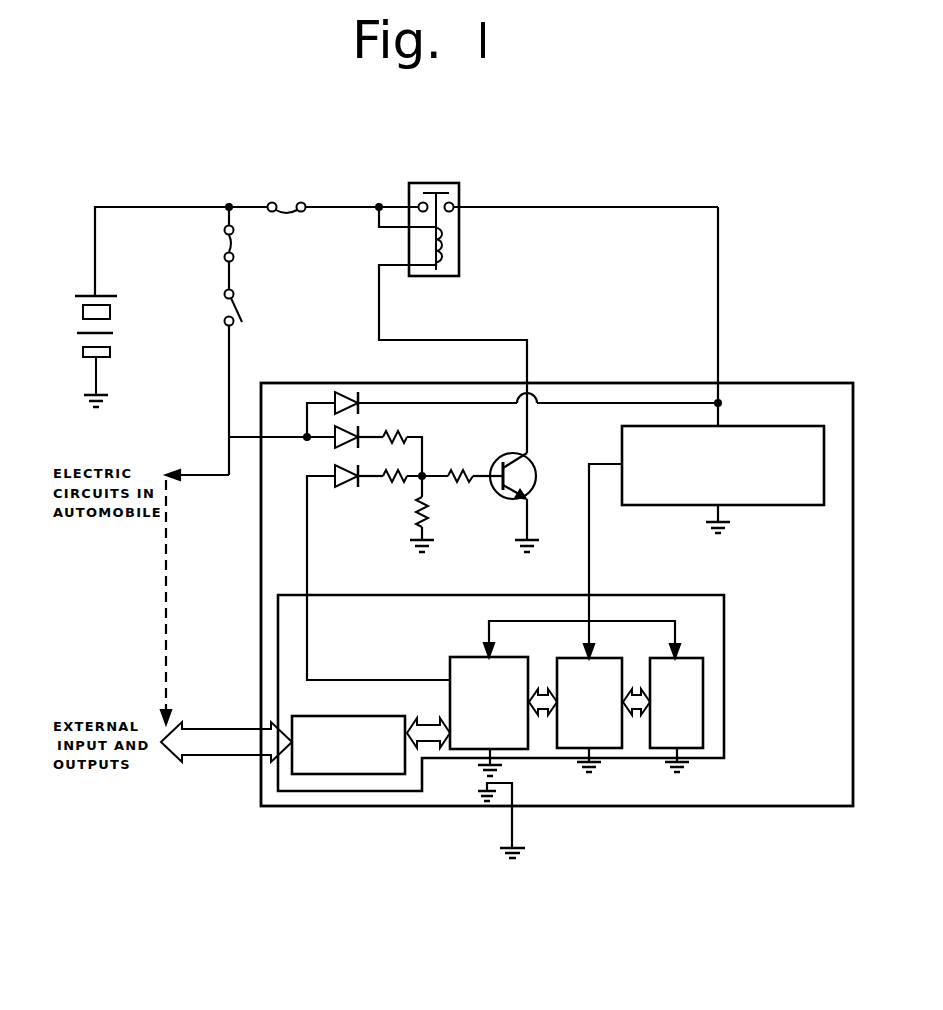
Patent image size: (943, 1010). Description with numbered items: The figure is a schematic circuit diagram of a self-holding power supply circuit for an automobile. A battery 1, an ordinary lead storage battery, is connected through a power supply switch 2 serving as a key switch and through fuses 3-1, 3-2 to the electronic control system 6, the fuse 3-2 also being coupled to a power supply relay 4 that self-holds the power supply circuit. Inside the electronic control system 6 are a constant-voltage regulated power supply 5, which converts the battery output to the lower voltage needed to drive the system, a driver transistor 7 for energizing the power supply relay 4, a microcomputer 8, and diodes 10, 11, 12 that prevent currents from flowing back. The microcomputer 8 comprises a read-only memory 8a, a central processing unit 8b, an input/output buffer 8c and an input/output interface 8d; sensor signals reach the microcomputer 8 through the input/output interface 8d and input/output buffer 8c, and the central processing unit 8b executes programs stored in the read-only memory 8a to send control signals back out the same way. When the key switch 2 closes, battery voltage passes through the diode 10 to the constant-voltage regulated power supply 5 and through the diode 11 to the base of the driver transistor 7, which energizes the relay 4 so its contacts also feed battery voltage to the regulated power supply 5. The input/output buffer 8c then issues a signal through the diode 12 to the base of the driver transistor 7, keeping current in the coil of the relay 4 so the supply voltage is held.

The battery 1 is at (120, 331).
The power supply switch 2 is at (242, 311).
The fuse 3-1 is at (240, 250).
The fuse 3-2 is at (287, 217).
The power supply relay 4 is at (461, 241).
The constant-voltage regulated power supply 5 is at (765, 426).
The electronic control system 6 is at (832, 383).
The driver transistor 7 is at (541, 461).
The microcomputer 8 is at (710, 610).
The read-only memory 8a is at (700, 750).
The central processing unit 8b is at (612, 750).
The input/output buffer 8c is at (520, 750).
The input/output interface 8d is at (318, 772).
The diode 10 is at (350, 394).
The diode 11 is at (360, 431).
The diode 12 is at (345, 490).